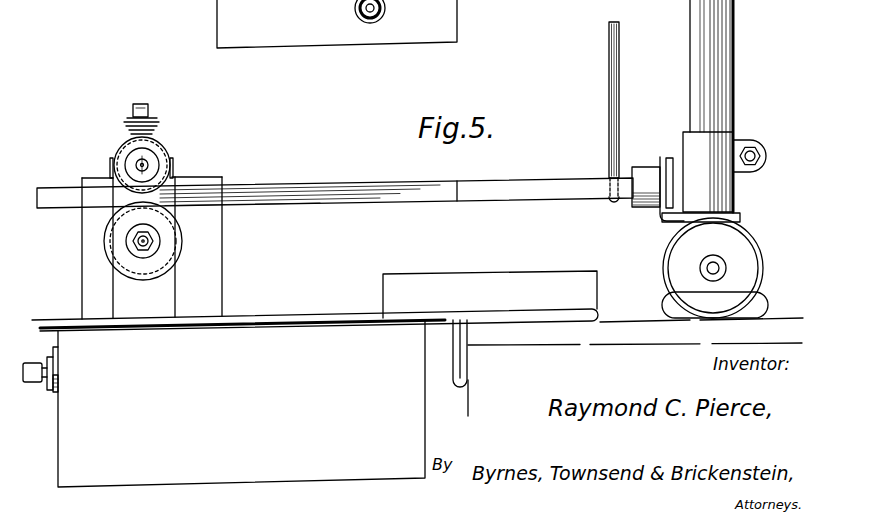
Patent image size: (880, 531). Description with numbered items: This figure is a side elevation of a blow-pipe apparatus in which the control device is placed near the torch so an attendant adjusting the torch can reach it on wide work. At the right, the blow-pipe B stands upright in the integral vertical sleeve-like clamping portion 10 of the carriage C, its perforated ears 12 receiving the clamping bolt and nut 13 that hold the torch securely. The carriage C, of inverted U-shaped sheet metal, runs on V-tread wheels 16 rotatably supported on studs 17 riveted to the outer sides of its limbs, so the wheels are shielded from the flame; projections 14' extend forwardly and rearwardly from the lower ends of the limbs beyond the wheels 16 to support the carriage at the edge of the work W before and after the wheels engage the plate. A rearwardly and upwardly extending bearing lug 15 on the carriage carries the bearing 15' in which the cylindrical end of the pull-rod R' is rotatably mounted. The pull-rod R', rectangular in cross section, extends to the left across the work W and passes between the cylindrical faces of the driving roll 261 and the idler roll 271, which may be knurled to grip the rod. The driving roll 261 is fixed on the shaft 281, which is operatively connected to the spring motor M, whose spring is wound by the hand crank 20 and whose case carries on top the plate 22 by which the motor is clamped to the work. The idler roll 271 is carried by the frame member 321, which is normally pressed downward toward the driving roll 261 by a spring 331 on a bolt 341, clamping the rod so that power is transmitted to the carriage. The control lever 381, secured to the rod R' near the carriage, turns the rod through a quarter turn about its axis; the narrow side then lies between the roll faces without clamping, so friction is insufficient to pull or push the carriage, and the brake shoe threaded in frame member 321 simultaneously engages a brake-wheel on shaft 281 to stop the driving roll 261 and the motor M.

The bolt 341 is at (147, 112).
The spring 331 is at (155, 129).
The frame member 321 is at (140, 165).
The idler roll 271 is at (165, 156).
The driving roll 261 is at (162, 254).
The shaft 281 is at (143, 246).
The plate 22 is at (275, 319).
The motor M is at (252, 480).
The hand crank 20 is at (33, 383).
The pull-rod R' is at (335, 182).
The control lever 381 is at (609, 73).
The bearing 15' is at (645, 175).
The bearing lug 15 is at (658, 199).
The blow-pipe B is at (728, 68).
The clamping portion 10 is at (683, 132).
The perforated ears 12 is at (749, 142).
The clamping bolt and nut 13 is at (761, 156).
The carriage C is at (738, 220).
The wheels 16 is at (760, 262).
The studs 17 is at (716, 272).
The projections 14' is at (729, 305).
The work W is at (624, 306).